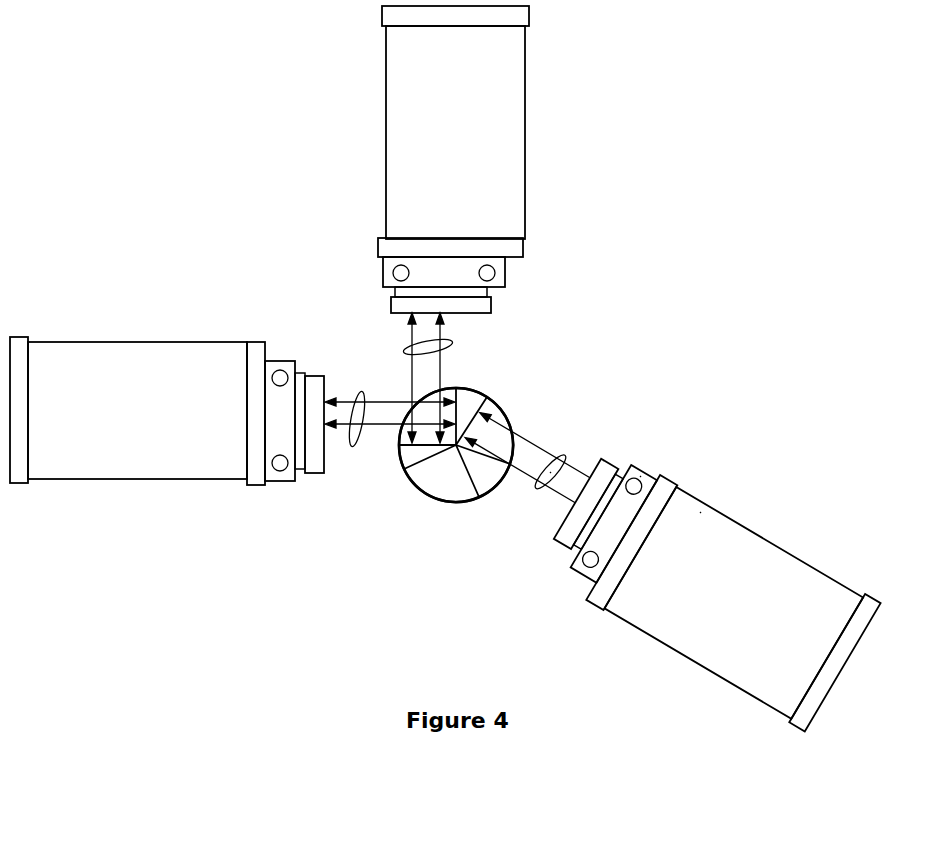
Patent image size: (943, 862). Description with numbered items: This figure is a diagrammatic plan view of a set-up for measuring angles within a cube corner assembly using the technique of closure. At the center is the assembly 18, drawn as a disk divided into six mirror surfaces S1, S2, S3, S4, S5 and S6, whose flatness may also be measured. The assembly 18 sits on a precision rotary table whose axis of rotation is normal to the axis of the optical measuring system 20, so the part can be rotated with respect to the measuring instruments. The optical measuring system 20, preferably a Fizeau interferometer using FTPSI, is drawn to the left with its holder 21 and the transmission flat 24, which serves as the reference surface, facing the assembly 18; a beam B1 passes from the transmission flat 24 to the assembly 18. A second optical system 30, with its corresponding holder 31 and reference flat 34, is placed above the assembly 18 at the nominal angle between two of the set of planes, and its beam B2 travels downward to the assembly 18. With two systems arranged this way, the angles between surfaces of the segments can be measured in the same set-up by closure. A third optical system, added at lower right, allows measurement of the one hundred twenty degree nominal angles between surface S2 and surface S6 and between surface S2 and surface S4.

The assembly 18 is at (418, 500).
The optical measuring system 20 is at (163, 353).
The first camera mount block 21 is at (272, 360).
The transmission flat 24 is at (315, 383).
The optical system 30 is at (388, 165).
The second camera mount block 31 is at (385, 270).
The second camera window plate 34 is at (398, 308).
The first light beam B1 is at (353, 446).
The second light beam B2 is at (452, 341).
The surface S1 is at (447, 389).
The surface S2 is at (401, 440).
The surface S3 is at (410, 472).
The surface S4 is at (477, 495).
The surface S5 is at (500, 468).
The surface S6 is at (487, 402).